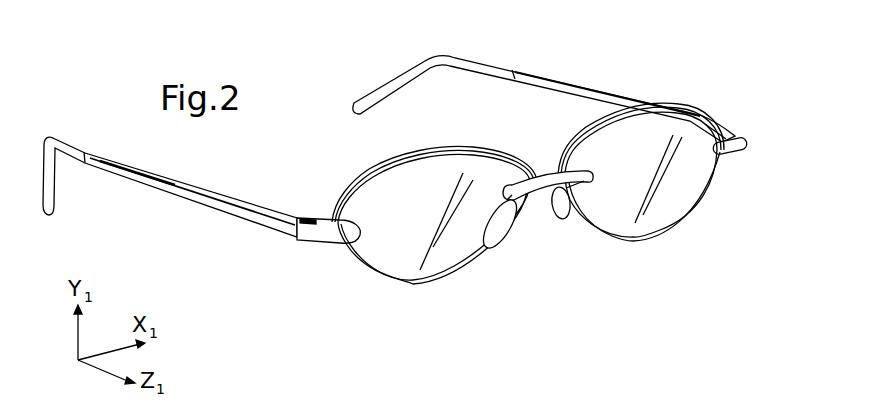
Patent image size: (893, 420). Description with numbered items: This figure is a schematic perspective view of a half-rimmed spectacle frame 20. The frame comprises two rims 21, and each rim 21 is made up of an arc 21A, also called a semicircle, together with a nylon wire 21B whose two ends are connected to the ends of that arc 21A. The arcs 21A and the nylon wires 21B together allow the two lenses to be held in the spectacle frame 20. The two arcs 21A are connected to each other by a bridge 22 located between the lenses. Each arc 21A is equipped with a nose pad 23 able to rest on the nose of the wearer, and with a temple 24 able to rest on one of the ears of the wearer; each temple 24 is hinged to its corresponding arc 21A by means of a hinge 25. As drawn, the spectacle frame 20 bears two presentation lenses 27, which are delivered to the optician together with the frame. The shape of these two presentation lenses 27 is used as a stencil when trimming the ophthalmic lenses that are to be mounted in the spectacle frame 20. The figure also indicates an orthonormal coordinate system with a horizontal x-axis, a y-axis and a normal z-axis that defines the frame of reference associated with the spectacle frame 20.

The half-rimmed spectacle frame 20 is at (403, 179).
The rim 21 is at (510, 172).
The arc 21A is at (421, 154).
The nylon wire 21B is at (343, 250).
The bridge 22 is at (565, 170).
The nose pad 23 is at (480, 243).
The temple 24 is at (233, 212).
The hinge 25 is at (303, 217).
The presentation lens 27 is at (452, 254).